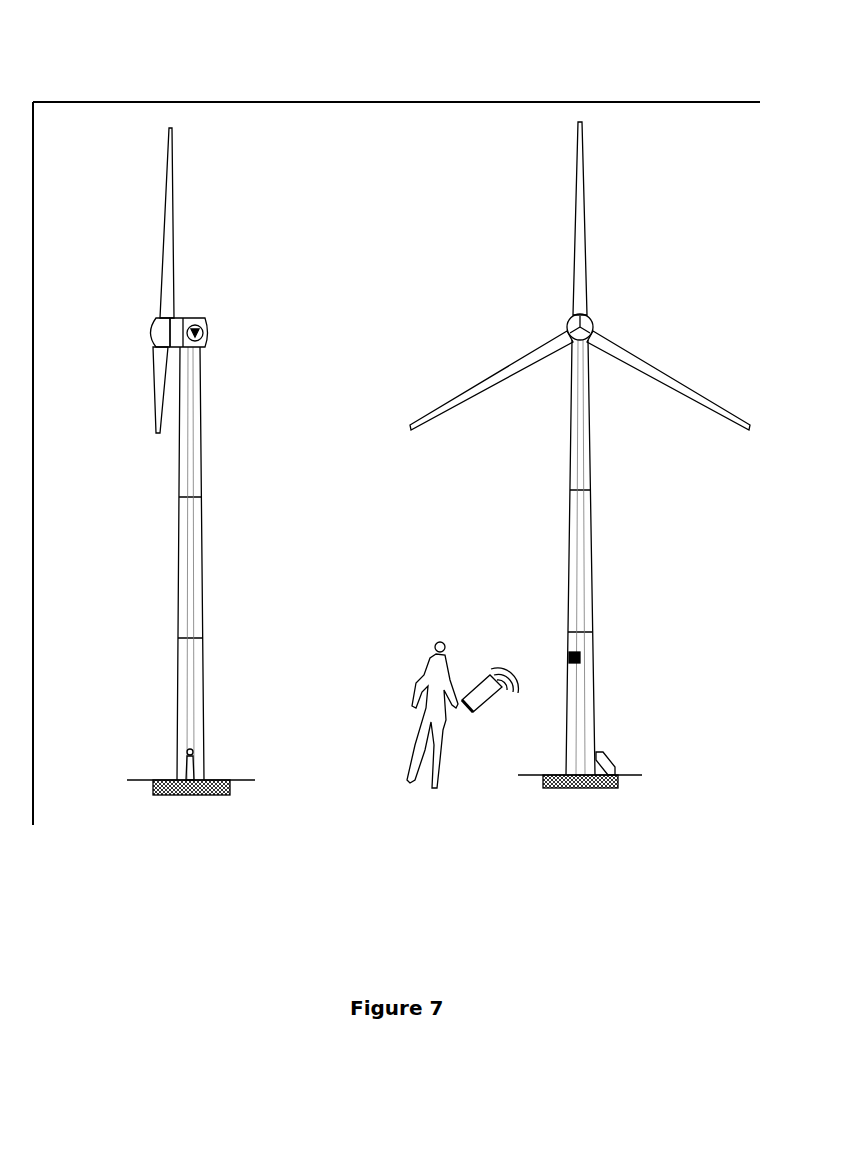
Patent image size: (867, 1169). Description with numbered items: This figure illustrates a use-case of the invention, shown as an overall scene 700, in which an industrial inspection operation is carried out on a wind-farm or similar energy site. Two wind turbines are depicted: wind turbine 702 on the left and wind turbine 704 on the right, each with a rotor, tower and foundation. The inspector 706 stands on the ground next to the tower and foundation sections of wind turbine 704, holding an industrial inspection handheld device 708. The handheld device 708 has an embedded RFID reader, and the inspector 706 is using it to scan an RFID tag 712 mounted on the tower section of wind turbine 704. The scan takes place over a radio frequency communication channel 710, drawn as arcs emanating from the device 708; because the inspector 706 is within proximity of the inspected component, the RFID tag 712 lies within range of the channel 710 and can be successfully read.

The wind turbine inspection system 700 is at (412, 30).
The wind turbine 702 is at (191, 427).
The wind turbine 704 is at (580, 423).
The inspector 706 is at (393, 757).
The industrial inspection handheld device 708 is at (467, 731).
The radio frequency communication channel 710 is at (506, 700).
The RFID tag 712 is at (589, 673).